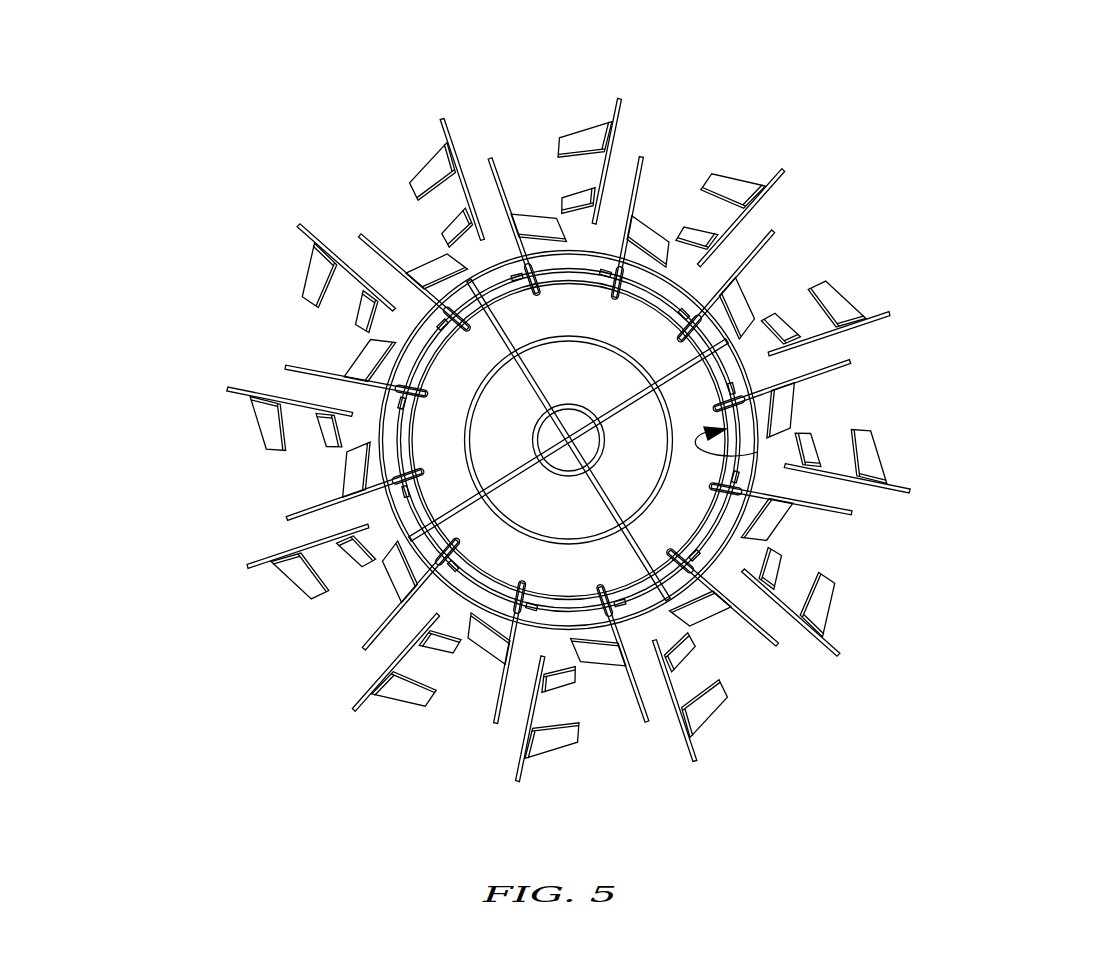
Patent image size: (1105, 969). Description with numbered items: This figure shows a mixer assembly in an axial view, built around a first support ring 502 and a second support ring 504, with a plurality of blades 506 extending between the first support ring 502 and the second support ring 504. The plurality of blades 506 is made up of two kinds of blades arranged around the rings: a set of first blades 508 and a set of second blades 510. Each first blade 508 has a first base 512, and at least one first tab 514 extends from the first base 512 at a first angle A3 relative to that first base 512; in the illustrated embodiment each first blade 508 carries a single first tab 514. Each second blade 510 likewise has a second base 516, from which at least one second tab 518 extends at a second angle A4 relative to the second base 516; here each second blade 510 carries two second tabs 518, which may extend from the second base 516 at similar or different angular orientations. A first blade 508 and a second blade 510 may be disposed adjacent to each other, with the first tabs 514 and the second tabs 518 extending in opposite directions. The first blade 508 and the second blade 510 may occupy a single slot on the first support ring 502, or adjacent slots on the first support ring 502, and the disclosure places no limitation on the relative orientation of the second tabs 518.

The first support ring 502 is at (757, 452).
The second support ring 504 is at (733, 550).
The plurality of blades 506 is at (905, 132).
The first blade 508 is at (890, 318).
The second blade 510 is at (640, 158).
The first base 512 is at (317, 385).
The first tab 514 is at (698, 240).
The second base 516 is at (658, 228).
The second tab 518 is at (737, 192).
The first angle A3 is at (597, 666).
The second angle A4 is at (553, 662).